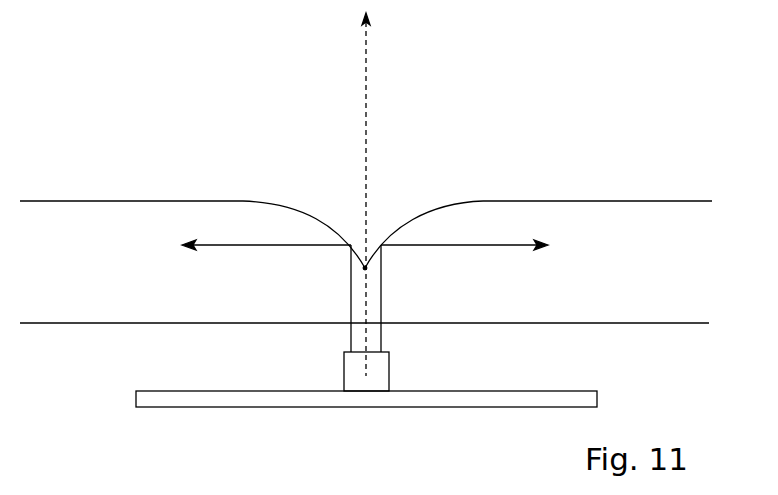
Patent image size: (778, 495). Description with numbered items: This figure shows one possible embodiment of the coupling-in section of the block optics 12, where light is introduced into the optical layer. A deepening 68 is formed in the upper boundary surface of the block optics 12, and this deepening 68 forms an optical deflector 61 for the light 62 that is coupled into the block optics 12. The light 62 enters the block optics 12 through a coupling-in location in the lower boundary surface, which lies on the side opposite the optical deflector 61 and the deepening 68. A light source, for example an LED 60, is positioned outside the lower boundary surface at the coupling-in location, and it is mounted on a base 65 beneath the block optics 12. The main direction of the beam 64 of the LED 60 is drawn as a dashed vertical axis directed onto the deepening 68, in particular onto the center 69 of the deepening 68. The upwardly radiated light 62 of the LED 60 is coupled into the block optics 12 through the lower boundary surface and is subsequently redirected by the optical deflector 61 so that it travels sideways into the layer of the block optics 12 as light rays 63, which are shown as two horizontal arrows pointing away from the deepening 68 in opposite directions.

The block optics 12 is at (516, 218).
The light source (LED) 60 is at (368, 375).
The optical deflector 61 is at (395, 207).
The light 62 is at (350, 292).
The light rays 63 is at (238, 246).
The main direction of the beam 64 is at (366, 73).
The base plate 65 is at (474, 398).
The deepening 68 is at (358, 231).
The center of the deepening 69 is at (365, 268).